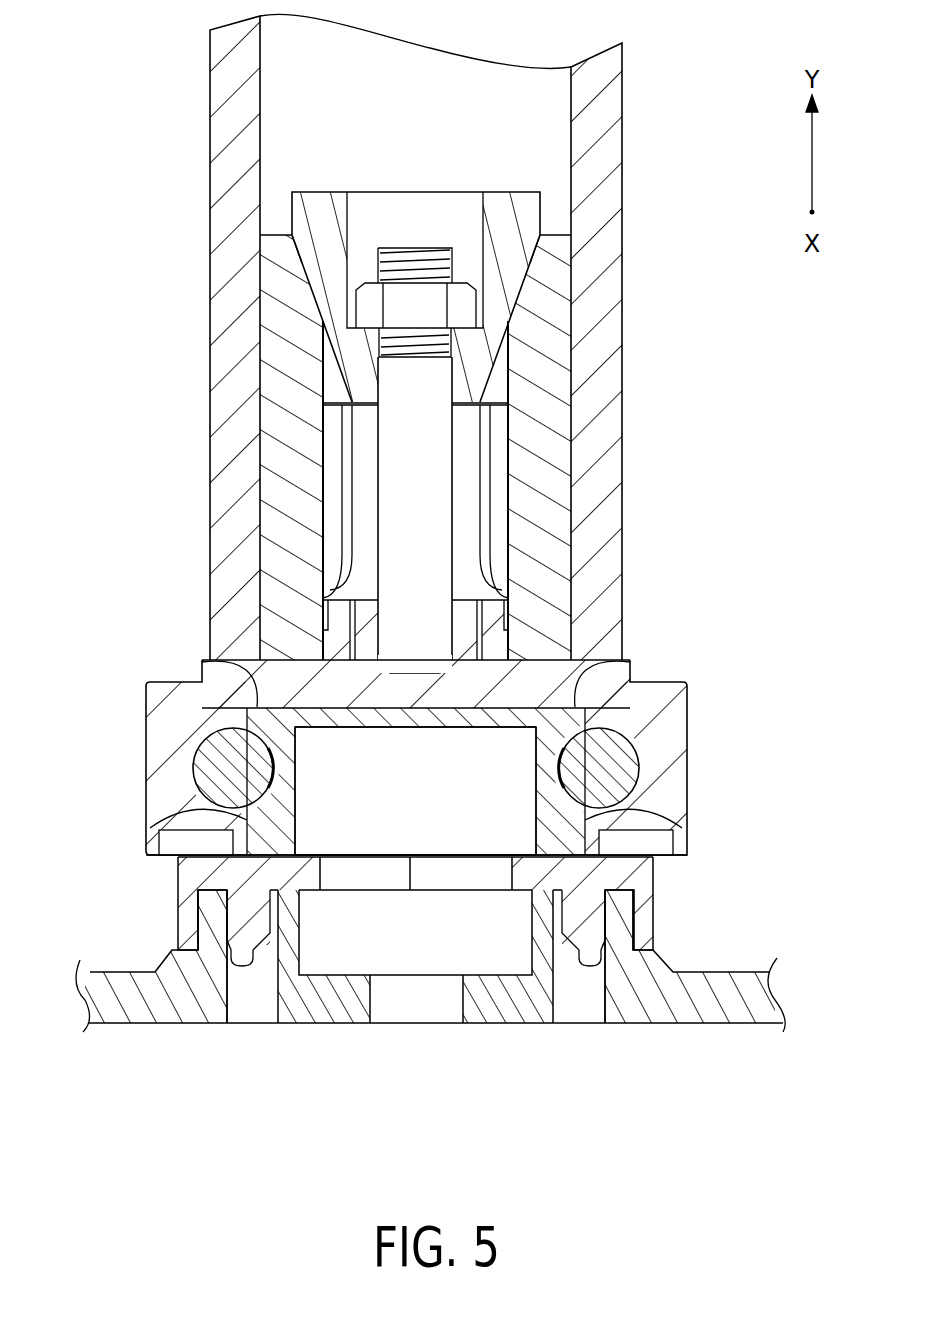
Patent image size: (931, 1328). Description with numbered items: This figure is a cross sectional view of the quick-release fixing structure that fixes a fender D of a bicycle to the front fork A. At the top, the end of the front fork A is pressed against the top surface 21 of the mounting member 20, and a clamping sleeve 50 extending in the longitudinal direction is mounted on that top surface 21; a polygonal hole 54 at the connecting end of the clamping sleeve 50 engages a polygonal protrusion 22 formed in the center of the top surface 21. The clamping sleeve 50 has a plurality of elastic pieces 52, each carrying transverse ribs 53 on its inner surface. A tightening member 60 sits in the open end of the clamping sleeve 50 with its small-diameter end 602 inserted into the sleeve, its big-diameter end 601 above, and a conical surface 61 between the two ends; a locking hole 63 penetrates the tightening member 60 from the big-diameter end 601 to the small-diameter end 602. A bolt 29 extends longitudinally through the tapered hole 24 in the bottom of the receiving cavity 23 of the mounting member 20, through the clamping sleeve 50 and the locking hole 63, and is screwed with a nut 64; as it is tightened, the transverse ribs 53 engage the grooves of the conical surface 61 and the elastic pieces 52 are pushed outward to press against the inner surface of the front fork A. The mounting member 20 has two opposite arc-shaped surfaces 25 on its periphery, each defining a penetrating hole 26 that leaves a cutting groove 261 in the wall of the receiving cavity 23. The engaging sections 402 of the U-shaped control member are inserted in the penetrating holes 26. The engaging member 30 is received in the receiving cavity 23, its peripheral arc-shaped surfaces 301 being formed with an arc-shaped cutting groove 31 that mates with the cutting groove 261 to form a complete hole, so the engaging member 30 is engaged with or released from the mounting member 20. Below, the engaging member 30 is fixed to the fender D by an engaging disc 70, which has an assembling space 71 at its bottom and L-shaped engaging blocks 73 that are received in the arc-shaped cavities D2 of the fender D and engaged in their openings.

The front fork A is at (626, 92).
The clamping sleeve 50 is at (572, 320).
The elastic pieces 52 is at (552, 262).
The polygonal protrusion 22 is at (468, 605).
The tightening member 60 is at (342, 378).
The big-diameter end 601 is at (330, 243).
The conical surface 61 is at (300, 255).
The locking hole 63 is at (415, 194).
The nut 64 is at (455, 300).
The bolt 29 is at (395, 555).
The transverse ribs 53 is at (510, 402).
The small-diameter end 602 is at (355, 407).
The polygonal hole 54 is at (340, 598).
The mounting member 20 is at (422, 723).
The top surface 21 is at (615, 655).
The tapered hole 24 is at (355, 683).
The arc-shaped surfaces 25 is at (168, 715).
The cutting groove 261 is at (218, 664).
The arc-shaped surfaces 301 is at (195, 838).
The receiving cavity 23 is at (580, 735).
The penetrating hole 26 is at (205, 760).
The engaging member 30 is at (416, 919).
The arc-shaped cutting groove 31 is at (293, 753).
The engaging sections 402 is at (240, 790).
The engaging disc 70 is at (422, 979).
The assembling space 71 is at (198, 912).
The engaging block 73 is at (252, 937).
The fender D is at (430, 1015).
The arc-shaped cavities D2 is at (250, 1012).